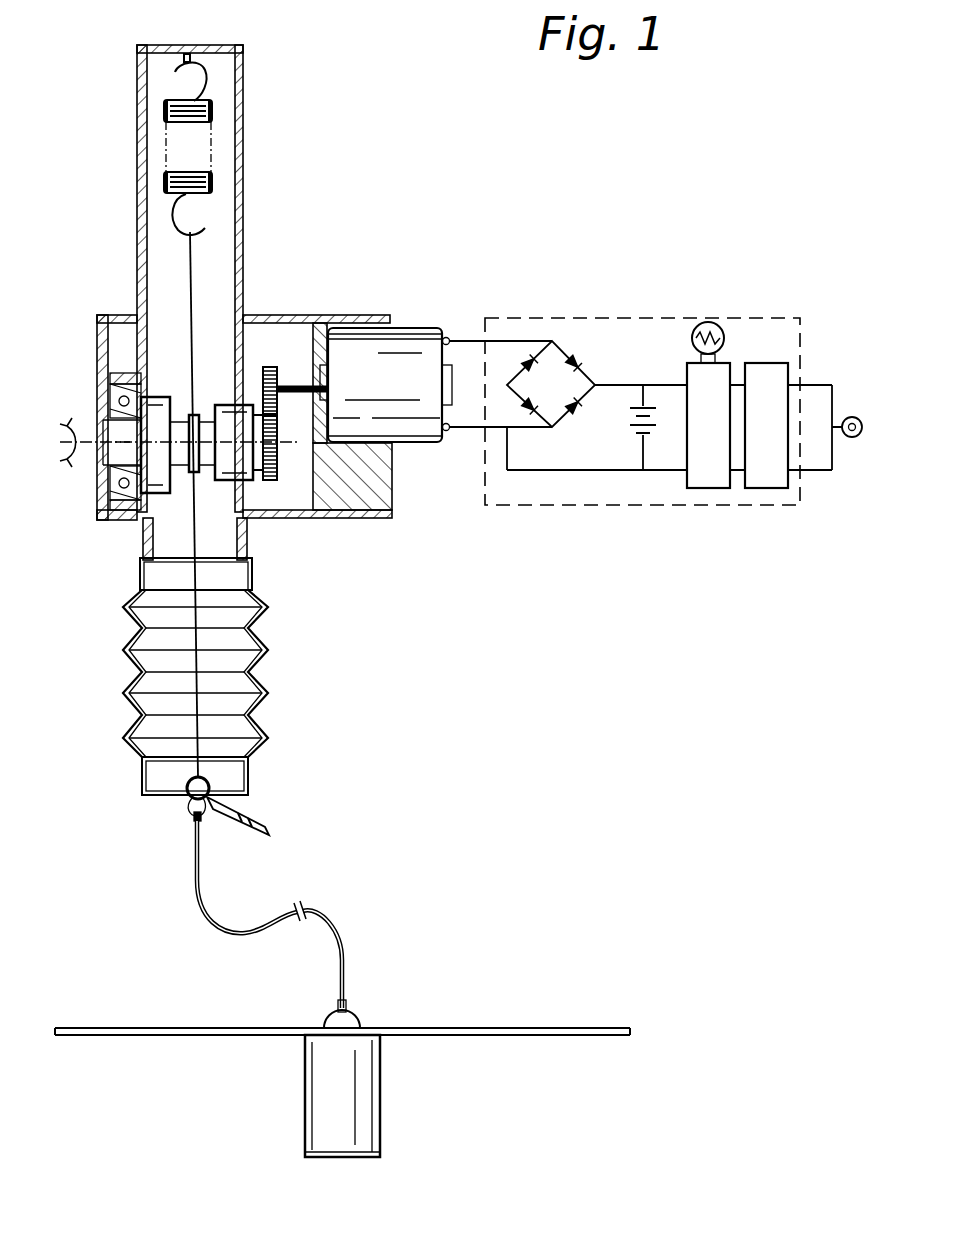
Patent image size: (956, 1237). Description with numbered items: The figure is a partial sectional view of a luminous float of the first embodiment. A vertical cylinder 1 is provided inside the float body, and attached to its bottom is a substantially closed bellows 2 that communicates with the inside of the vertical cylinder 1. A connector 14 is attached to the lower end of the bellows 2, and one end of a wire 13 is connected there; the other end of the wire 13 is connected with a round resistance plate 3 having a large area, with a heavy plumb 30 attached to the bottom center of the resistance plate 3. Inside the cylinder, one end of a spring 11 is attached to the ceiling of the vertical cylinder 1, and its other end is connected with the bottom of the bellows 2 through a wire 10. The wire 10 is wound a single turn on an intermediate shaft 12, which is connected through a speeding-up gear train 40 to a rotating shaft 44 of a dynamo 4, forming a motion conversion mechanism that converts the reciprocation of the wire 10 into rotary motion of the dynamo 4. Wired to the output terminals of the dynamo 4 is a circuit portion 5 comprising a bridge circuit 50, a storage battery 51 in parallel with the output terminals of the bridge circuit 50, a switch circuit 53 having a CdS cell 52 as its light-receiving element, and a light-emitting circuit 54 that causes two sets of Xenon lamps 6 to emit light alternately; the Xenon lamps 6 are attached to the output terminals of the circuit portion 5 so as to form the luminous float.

The vertical cylinder 1 is at (246, 180).
The bellows 2 is at (262, 613).
The resistance plate 3 is at (530, 1027).
The dynamo 4 is at (428, 326).
The circuit portion 5 is at (612, 316).
The Xenon lamp 6 is at (851, 415).
The wire 10 is at (190, 273).
The spring 11 is at (213, 108).
The intermediate shaft 12 is at (168, 385).
The wire 13 is at (247, 930).
The connector 14 is at (260, 815).
The plumb 30 is at (381, 1095).
The gear train 40 is at (280, 460).
The rotating shaft 44 is at (296, 366).
The bridge circuit 50 is at (556, 423).
The storage battery 51 is at (655, 437).
The CdS cell 52 is at (716, 322).
The switch circuit 53 is at (718, 477).
The light-emitting circuit 54 is at (770, 477).